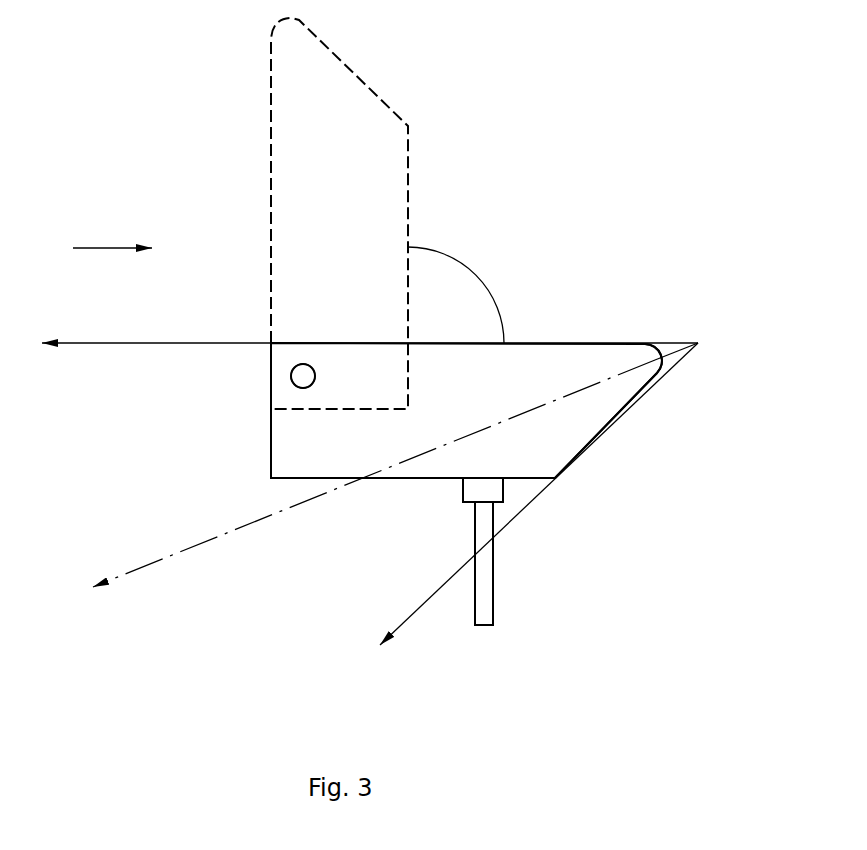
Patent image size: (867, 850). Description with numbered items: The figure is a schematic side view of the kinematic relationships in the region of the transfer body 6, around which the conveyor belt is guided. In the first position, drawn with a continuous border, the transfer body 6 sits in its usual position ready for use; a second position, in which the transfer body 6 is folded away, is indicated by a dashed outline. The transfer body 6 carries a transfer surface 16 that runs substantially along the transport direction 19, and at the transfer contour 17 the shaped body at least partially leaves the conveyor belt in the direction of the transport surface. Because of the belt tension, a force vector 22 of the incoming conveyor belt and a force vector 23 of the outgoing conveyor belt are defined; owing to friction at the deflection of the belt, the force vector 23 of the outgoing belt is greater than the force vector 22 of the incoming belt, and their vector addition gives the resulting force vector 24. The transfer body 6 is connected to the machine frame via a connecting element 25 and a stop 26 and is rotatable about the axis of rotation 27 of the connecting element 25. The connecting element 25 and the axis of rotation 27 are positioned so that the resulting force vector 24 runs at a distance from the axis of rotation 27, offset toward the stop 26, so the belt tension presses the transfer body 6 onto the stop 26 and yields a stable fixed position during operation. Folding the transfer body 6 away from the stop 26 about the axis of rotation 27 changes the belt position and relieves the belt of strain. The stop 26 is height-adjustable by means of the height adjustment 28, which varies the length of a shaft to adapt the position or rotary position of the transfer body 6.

The transfer body 6 is at (570, 418).
The transfer surface 16 is at (547, 343).
The transfer contour 17 is at (657, 345).
The transport direction 19 is at (98, 248).
The force vector of the incoming conveyor belt 22 is at (103, 345).
The force vector of the outgoing conveyor belt 23 is at (425, 600).
The resulting force vector 24 is at (187, 547).
The connecting element 25 is at (295, 382).
The stop 26 is at (482, 490).
The axis of rotation 27 is at (303, 376).
The height adjustment 28 is at (483, 583).